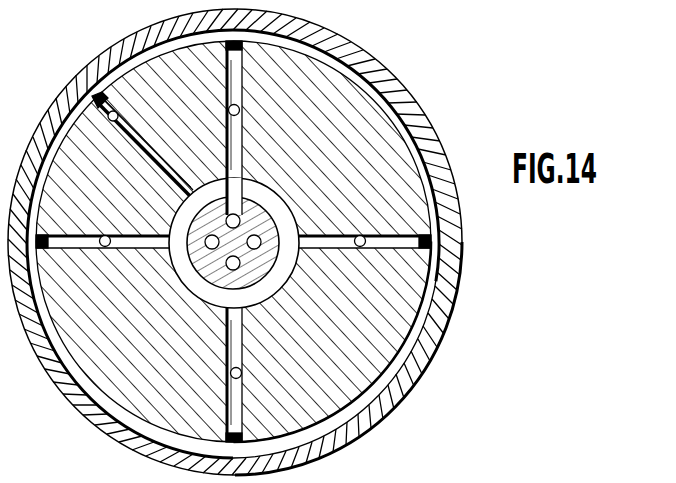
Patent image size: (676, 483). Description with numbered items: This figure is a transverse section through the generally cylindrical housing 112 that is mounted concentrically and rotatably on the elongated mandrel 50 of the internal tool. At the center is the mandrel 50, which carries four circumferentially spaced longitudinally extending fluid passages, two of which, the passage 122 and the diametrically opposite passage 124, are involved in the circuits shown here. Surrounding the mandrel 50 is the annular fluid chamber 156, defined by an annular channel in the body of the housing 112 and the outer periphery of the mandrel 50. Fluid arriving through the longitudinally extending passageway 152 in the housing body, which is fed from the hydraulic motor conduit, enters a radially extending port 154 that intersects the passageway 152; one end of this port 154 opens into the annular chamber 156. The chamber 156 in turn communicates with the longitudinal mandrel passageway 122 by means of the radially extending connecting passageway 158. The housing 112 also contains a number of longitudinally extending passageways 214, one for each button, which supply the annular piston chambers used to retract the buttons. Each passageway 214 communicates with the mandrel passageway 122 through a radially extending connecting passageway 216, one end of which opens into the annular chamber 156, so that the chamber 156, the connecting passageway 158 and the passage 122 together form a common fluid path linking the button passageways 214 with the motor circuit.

The cylindrical housing 112 is at (354, 92).
The longitudinally extending passageway 152 is at (99, 100).
The radially extending port 154 is at (156, 153).
The annular fluid chamber 156 is at (195, 287).
The radially extending connecting passageway 158 is at (239, 181).
The longitudinally extending passage 122 is at (247, 216).
The longitudinally extending passage 124 is at (237, 270).
The mandrel 50 is at (262, 252).
The longitudinally extending passageway 214 is at (240, 108).
The radially extending connecting passageway 216 is at (240, 134).